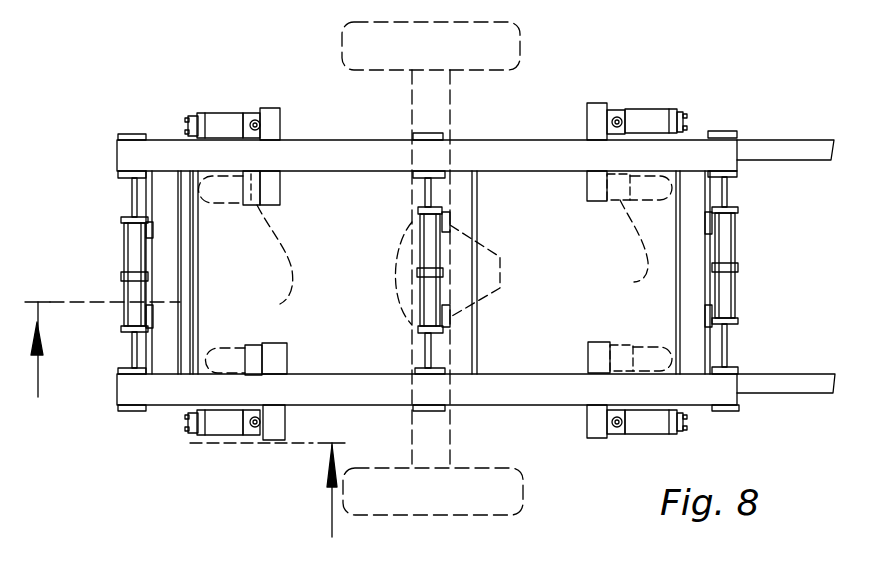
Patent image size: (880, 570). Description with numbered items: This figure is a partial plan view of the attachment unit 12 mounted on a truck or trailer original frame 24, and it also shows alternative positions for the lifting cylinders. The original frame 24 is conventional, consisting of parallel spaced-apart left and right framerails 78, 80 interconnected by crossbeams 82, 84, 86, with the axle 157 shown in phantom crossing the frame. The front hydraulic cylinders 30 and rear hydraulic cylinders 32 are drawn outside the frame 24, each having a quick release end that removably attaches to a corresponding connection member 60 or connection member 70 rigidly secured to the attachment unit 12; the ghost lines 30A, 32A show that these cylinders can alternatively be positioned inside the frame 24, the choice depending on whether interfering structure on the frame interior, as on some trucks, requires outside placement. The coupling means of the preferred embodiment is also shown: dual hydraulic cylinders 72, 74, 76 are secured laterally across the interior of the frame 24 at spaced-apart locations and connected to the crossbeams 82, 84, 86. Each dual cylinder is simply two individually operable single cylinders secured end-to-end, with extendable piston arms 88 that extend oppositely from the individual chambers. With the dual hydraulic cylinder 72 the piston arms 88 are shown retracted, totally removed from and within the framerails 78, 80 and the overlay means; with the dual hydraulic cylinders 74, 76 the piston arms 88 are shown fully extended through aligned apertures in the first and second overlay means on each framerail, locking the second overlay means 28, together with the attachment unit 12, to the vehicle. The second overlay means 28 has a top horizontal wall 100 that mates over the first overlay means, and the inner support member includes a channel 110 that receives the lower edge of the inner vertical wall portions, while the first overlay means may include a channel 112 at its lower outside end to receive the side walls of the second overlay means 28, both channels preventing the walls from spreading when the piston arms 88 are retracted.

The attachment unit 12 is at (185, 432).
The original frame 24 is at (803, 136).
The second overlay means 28 is at (312, 140).
The front hydraulic cylinder 30 is at (637, 104).
The front hydraulic cylinder (ghost line position) 30A is at (651, 342).
The rear hydraulic cylinder 32 is at (240, 112).
The rear hydraulic cylinder (ghost line position) 32A is at (224, 346).
The connection member 60 is at (597, 108).
The connection member 70 is at (278, 112).
The dual hydraulic cylinder 72 is at (735, 250).
The dual hydraulic cylinder 74 is at (418, 229).
The dual hydraulic cylinder 76 is at (123, 252).
The left framerail 78 is at (807, 378).
The right framerail 80 is at (815, 160).
The crossbeam 82 is at (695, 297).
The crossbeam 84 is at (466, 223).
The crossbeam 86 is at (177, 258).
The extendable piston arm 88 is at (131, 190).
The top horizontal wall 100 is at (483, 150).
The channel 110 is at (738, 170).
The channel 112 is at (728, 130).
The axle 157 is at (450, 82).